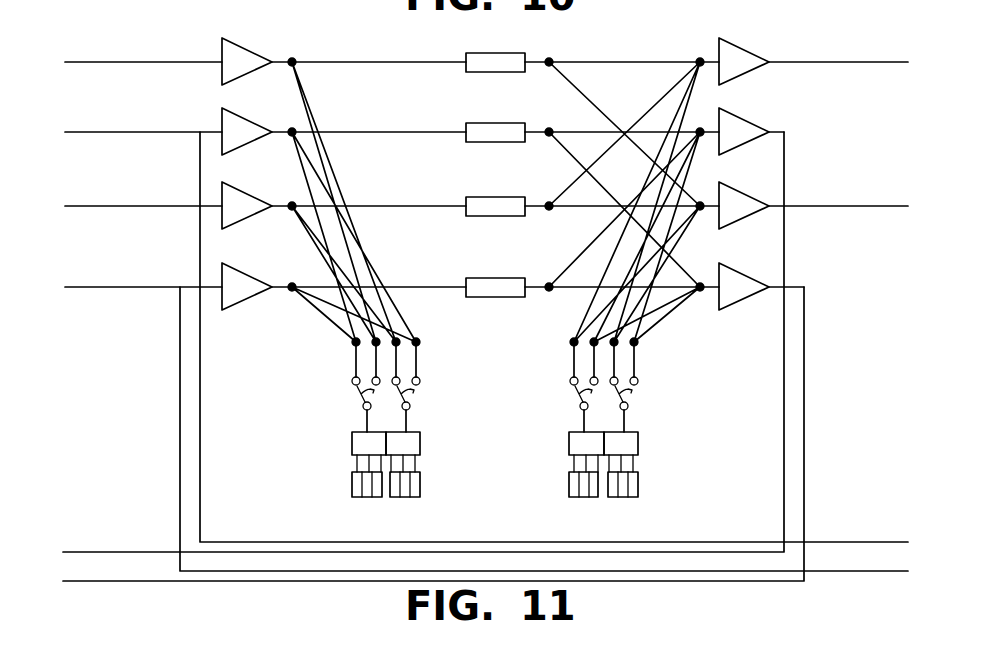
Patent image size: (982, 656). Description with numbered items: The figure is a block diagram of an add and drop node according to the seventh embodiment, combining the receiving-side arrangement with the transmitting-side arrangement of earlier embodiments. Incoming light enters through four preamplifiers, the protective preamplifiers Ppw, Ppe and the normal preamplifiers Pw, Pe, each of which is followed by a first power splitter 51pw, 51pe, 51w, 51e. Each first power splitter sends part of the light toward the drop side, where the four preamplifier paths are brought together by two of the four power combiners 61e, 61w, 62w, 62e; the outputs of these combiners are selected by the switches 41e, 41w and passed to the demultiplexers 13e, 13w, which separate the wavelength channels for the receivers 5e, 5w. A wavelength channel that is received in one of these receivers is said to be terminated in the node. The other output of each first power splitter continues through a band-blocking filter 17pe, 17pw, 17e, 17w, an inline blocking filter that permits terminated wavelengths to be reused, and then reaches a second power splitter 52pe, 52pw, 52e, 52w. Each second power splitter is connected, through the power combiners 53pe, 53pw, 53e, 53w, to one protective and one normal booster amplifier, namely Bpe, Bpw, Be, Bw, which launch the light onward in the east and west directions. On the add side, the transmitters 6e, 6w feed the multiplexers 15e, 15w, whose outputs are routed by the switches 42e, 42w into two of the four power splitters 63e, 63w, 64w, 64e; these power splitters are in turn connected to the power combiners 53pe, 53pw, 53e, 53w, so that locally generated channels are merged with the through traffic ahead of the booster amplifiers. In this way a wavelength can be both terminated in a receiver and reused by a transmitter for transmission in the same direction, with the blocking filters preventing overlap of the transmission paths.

The preamplifier Ppw is at (243, 47).
The preamplifier Ppe is at (243, 117).
The preamplifier Pw is at (243, 191).
The preamplifier Pe is at (243, 272).
The booster amplifier Bpe is at (745, 50).
The booster amplifier Bpw is at (745, 120).
The booster amplifier Be is at (745, 194).
The booster amplifier Bw is at (745, 275).
The band-blocking filter 17pe is at (490, 53).
The band-blocking filter 17pw is at (490, 123).
The band-blocking filter 17e is at (490, 197).
The band-blocking filter 17w is at (490, 278).
The first power splitter 51pw is at (274, 33).
The first power splitter 51pe is at (292, 130).
The first power splitter 51w is at (292, 204).
The first power splitter 51e is at (292, 285).
The second power splitter 52pe is at (549, 62).
The second power splitter 52pw is at (549, 132).
The second power splitter 52e is at (549, 206).
The second power splitter 52w is at (549, 287).
The power combiner 53pe is at (700, 62).
The power combiner 53pw is at (700, 130).
The power combiner 53e is at (700, 204).
The power combiner 53w is at (700, 285).
The power combiner 61e is at (356, 342).
The power combiner 61w is at (376, 343).
The power combiner 62w is at (396, 343).
The power combiner 62e is at (416, 343).
The power splitter 63e is at (574, 342).
The power splitter 63w is at (594, 343).
The power splitter 64w is at (614, 343).
The power splitter 64e is at (634, 343).
The switch 41e is at (356, 381).
The switch 41w is at (418, 382).
The switch 42e is at (574, 382).
The switch 42w is at (634, 382).
The demultiplexer 13e is at (352, 440).
The demultiplexer 13w is at (420, 446).
The multiplexer 15e is at (569, 440).
The multiplexer 15w is at (638, 440).
The receiver 5e is at (352, 480).
The receiver 5w is at (420, 485).
The transmitter 6e is at (569, 485).
The transmitter 6w is at (638, 485).